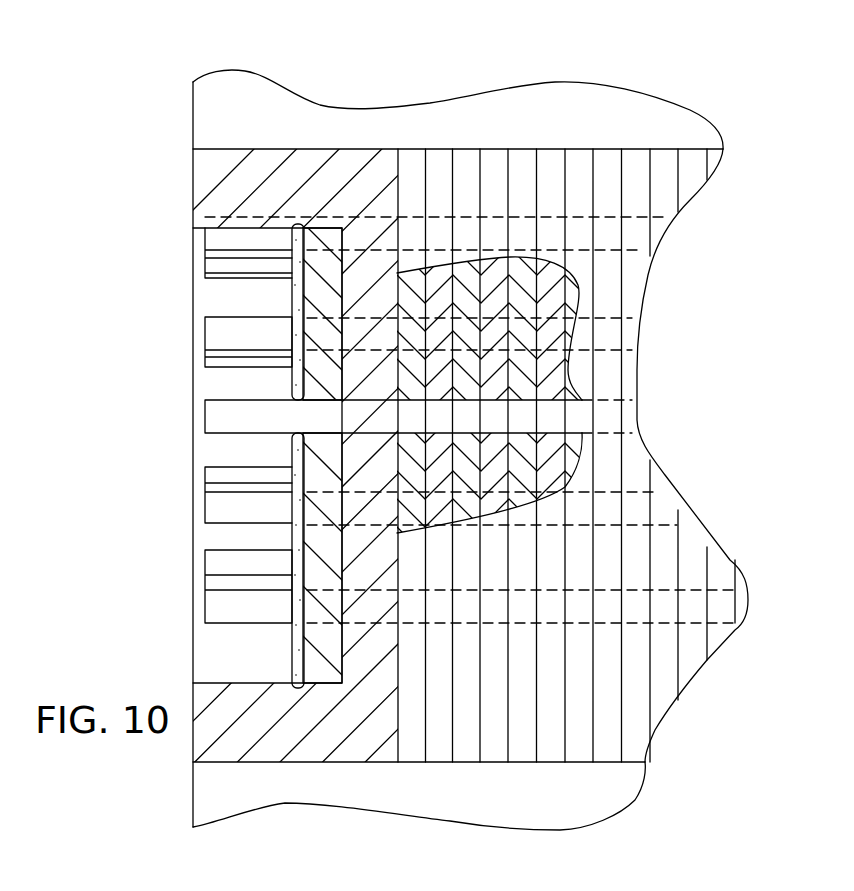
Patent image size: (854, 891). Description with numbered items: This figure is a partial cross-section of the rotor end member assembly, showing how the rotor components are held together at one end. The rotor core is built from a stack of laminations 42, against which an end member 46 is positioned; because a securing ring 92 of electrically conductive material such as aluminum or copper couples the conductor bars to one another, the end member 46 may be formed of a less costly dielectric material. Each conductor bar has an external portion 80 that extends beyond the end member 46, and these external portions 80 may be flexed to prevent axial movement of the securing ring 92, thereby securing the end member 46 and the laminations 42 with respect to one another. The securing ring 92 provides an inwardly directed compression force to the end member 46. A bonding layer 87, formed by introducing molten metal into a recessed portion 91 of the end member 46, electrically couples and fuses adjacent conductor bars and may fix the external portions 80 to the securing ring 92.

The end member 46 is at (257, 163).
The laminations 42 is at (495, 158).
The bonding layer 87 is at (290, 260).
The external portion 80 is at (221, 334).
The recessed portion 91 is at (222, 380).
The securing ring 92 is at (317, 670).